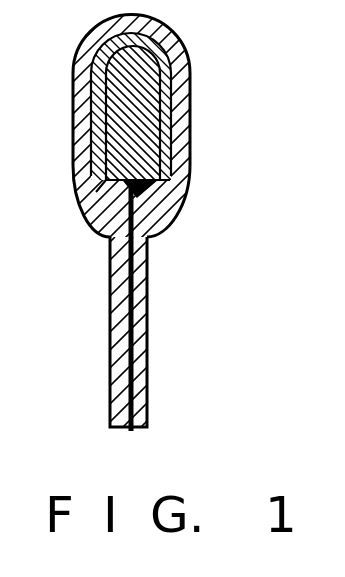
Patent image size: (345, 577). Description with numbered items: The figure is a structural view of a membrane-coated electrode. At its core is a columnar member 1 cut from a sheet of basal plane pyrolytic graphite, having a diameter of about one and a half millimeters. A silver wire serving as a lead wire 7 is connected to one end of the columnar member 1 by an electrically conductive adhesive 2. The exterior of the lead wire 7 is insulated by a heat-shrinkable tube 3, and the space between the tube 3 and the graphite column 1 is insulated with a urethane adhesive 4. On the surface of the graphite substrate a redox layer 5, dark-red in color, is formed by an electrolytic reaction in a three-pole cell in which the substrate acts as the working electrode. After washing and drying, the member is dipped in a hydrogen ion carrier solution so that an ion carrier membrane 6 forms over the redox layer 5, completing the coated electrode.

The columnar member 1 is at (143, 107).
The electrically conductive adhesive 2 is at (100, 204).
The heat-shrinkable tube 3 is at (148, 270).
The urethane adhesive 4 is at (137, 322).
The redox layer 5 is at (160, 70).
The ion carrier membrane 6 is at (170, 40).
The lead wire 7 is at (142, 395).